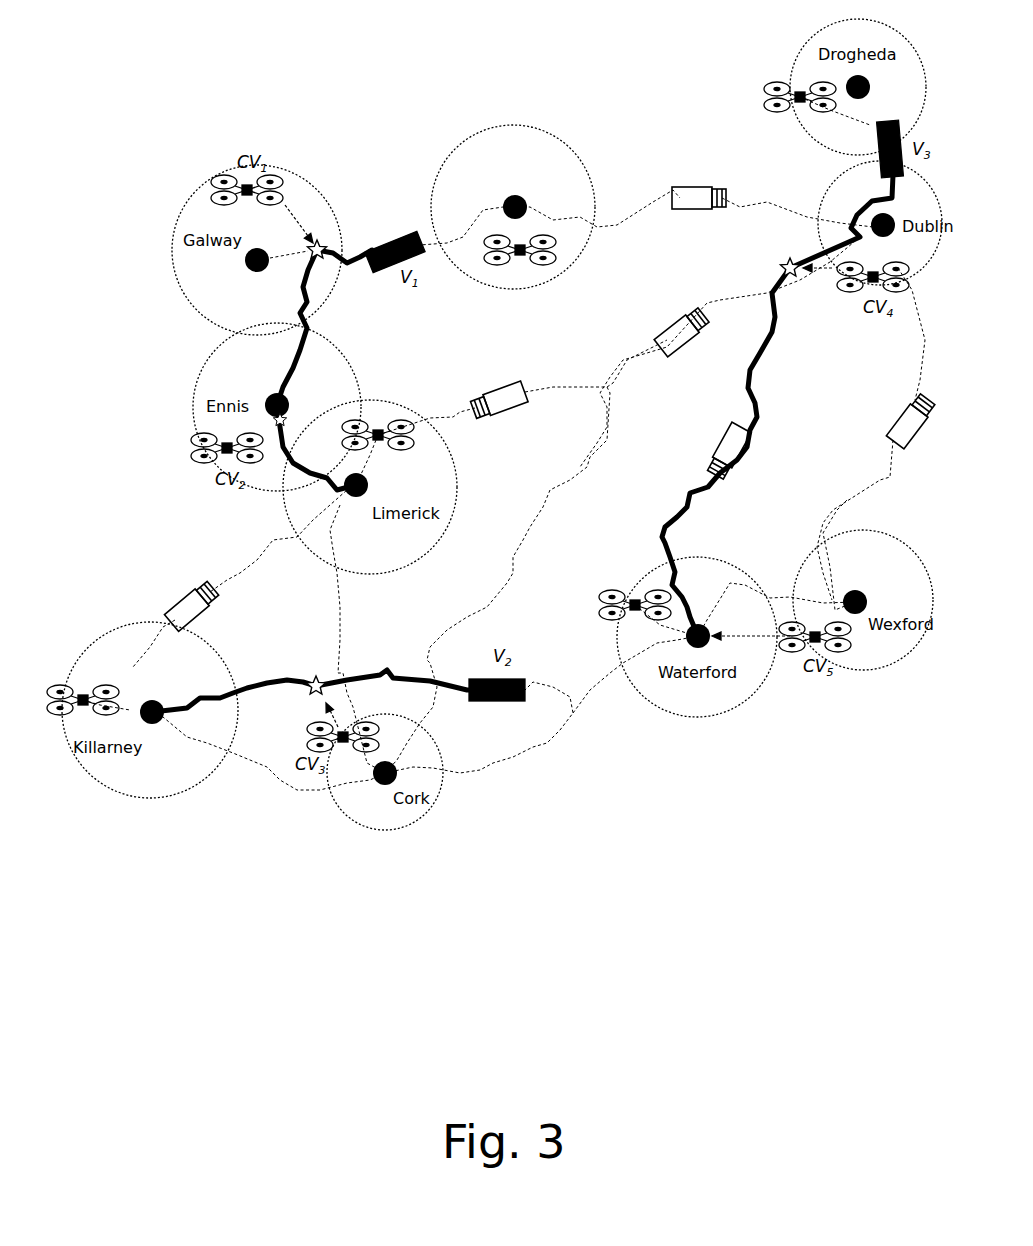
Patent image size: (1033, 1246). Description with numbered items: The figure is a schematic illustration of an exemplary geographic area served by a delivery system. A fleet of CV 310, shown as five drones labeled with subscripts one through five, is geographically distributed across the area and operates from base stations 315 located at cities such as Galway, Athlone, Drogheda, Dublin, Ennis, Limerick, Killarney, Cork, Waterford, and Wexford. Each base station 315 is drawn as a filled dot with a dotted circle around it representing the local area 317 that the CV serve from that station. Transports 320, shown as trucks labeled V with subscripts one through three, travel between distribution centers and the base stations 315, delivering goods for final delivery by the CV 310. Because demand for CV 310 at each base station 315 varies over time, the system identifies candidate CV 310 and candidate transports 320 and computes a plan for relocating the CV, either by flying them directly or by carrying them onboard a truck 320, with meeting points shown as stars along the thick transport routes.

The CV 310 is at (518, 252).
The base station 315 is at (503, 207).
The local area 317 is at (580, 253).
The transport 320 is at (700, 187).